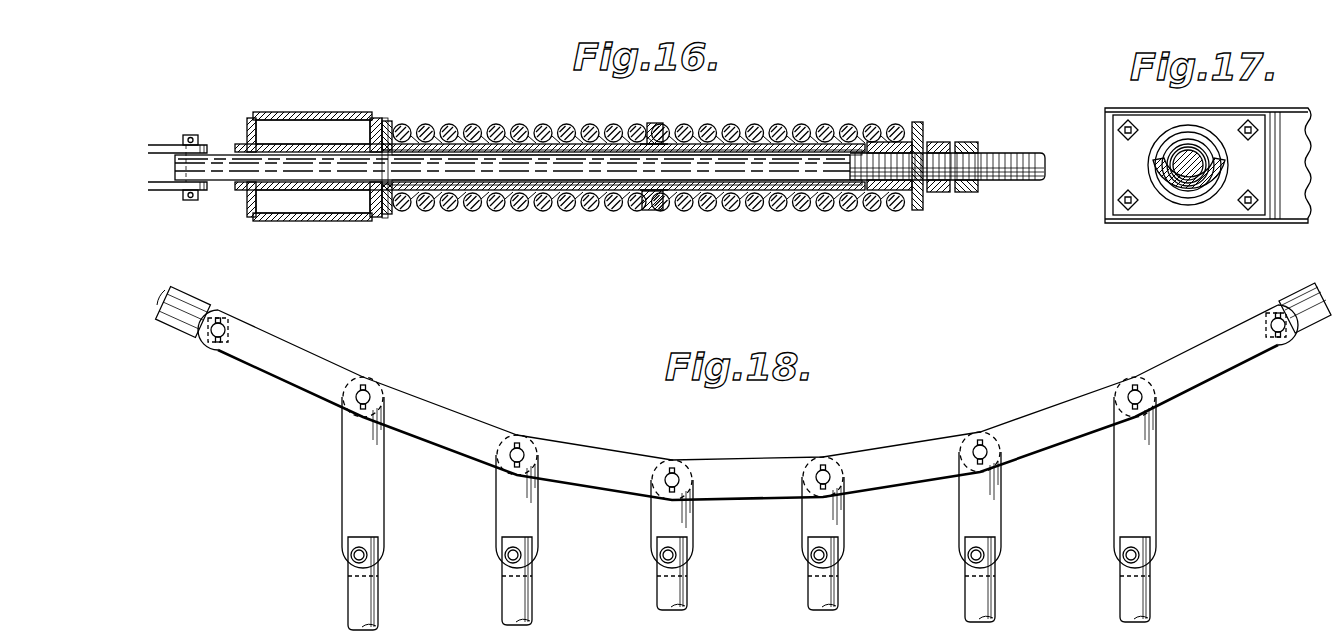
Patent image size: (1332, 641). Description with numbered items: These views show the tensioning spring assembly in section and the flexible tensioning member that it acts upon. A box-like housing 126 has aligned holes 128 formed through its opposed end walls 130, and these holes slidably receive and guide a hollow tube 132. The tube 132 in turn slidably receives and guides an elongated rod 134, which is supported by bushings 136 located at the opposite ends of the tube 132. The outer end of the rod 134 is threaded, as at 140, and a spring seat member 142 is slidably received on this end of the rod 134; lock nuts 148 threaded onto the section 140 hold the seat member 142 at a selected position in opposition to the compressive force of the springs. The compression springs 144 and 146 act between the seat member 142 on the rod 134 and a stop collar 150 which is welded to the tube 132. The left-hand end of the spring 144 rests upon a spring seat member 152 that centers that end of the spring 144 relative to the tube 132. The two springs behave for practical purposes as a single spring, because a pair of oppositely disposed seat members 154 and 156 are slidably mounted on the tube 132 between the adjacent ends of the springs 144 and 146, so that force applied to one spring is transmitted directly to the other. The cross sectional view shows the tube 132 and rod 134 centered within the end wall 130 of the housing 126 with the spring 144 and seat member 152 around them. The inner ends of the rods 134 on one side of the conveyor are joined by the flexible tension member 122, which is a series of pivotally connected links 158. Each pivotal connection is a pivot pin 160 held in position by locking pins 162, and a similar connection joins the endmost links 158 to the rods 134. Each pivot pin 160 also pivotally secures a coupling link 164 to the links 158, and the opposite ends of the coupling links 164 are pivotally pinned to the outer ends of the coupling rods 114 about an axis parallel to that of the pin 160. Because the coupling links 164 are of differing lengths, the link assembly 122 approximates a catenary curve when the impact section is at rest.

In FIG. 18, the coupling rod 114 is at (350, 605).
In FIG. 18, the flexible tension member 122 is at (748, 402).
In FIG. 16, the box-like housing 126 is at (292, 111).
In FIG. 17, the box-like housing 126 is at (1230, 110).
In FIG. 16, the aligned holes 128 is at (260, 126).
In FIG. 16, the end walls 130 is at (250, 118).
In FIG. 17, the end walls 130 is at (1110, 182).
In FIG. 16, the hollow tube 132 is at (466, 140).
In FIG. 17, the hollow tube 132 is at (1205, 197).
In FIG. 16, the elongated rod 134 is at (537, 176).
In FIG. 17, the elongated rod 134 is at (1180, 165).
In FIG. 18, the elongated rod 134 is at (190, 300).
In FIG. 16, the bushings 136 is at (818, 144).
In FIG. 16, the threaded section 140 is at (1005, 153).
In FIG. 16, the spring seat member 142 is at (924, 132).
In FIG. 16, the compression spring 144 is at (590, 190).
In FIG. 17, the compression spring 144 is at (1183, 193).
In FIG. 16, the compression spring 146 is at (770, 205).
In FIG. 16, the lock nuts 148 is at (964, 193).
In FIG. 16, the stop collar 150 is at (384, 220).
In FIG. 17, the stop collar 150 is at (1140, 210).
In FIG. 16, the spring seat member 152 is at (388, 120).
In FIG. 17, the spring seat member 152 is at (1180, 125).
In FIG. 16, the seat member 154 is at (650, 212).
In FIG. 16, the seat member 156 is at (665, 211).
In FIG. 16, the links 158 is at (170, 191).
In FIG. 18, the links 158 is at (312, 353).
In FIG. 18, the pivot pin 160 is at (372, 395).
In FIG. 18, the locking pins 162 is at (352, 408).
In FIG. 18, the coupling link 164 is at (380, 508).